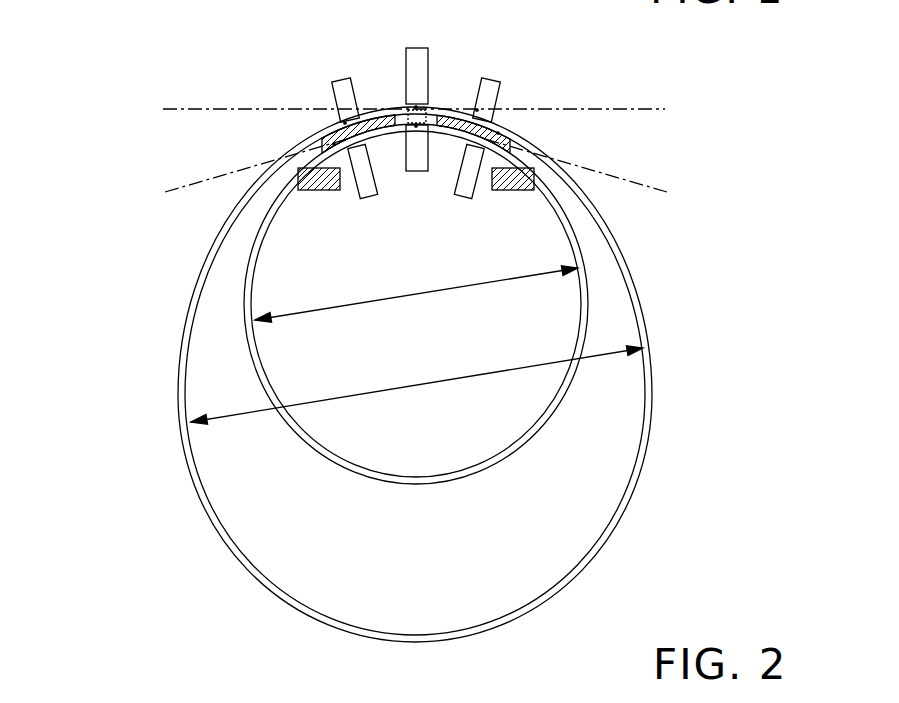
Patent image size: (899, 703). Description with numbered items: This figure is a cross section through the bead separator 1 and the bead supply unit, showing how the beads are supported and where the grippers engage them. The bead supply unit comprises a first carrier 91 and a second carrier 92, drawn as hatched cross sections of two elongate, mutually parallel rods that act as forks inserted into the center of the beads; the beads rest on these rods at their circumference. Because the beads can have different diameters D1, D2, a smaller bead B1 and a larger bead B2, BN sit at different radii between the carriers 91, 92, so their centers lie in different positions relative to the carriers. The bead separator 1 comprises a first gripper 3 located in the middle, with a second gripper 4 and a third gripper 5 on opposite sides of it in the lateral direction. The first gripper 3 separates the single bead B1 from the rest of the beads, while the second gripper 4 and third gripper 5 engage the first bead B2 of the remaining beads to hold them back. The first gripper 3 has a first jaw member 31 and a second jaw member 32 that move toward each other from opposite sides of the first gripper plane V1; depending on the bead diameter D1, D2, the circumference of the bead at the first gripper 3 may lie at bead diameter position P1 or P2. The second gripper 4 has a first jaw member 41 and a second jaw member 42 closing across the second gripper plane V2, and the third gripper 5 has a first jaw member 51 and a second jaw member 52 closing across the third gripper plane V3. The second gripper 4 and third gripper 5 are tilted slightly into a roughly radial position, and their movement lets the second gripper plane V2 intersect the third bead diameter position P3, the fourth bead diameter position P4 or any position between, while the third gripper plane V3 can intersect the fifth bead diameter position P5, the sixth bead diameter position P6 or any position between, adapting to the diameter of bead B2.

The bead separator 1 is at (186, 57).
The first gripper 3 is at (446, 111).
The first jaw member 31 is at (423, 68).
The second jaw member 32 is at (420, 174).
The second gripper 4 is at (324, 133).
The first jaw member 41 is at (340, 88).
The second jaw member 42 is at (364, 192).
The third gripper 5 is at (514, 135).
The first jaw member 51 is at (502, 95).
The second jaw member 52 is at (470, 192).
The first carrier 91 is at (322, 190).
The second carrier 92 is at (514, 190).
The bead diameter position P1 is at (415, 128).
The bead diameter position P2 is at (417, 107).
The third bead diameter position P3 is at (498, 134).
The fourth bead diameter position P4 is at (477, 110).
The fifth bead diameter position P5 is at (334, 144).
The sixth bead diameter position P6 is at (345, 123).
The first gripper plane V1 is at (432, 104).
The second gripper plane V2 is at (232, 175).
The third gripper plane V3 is at (593, 172).
The bead diameter D1 is at (416, 290).
The bead diameter D2 is at (417, 385).
The single bead B1 is at (253, 322).
The first bead of the rest of the plurality of beads B2 is at (360, 374).
The bead BN is at (205, 507).